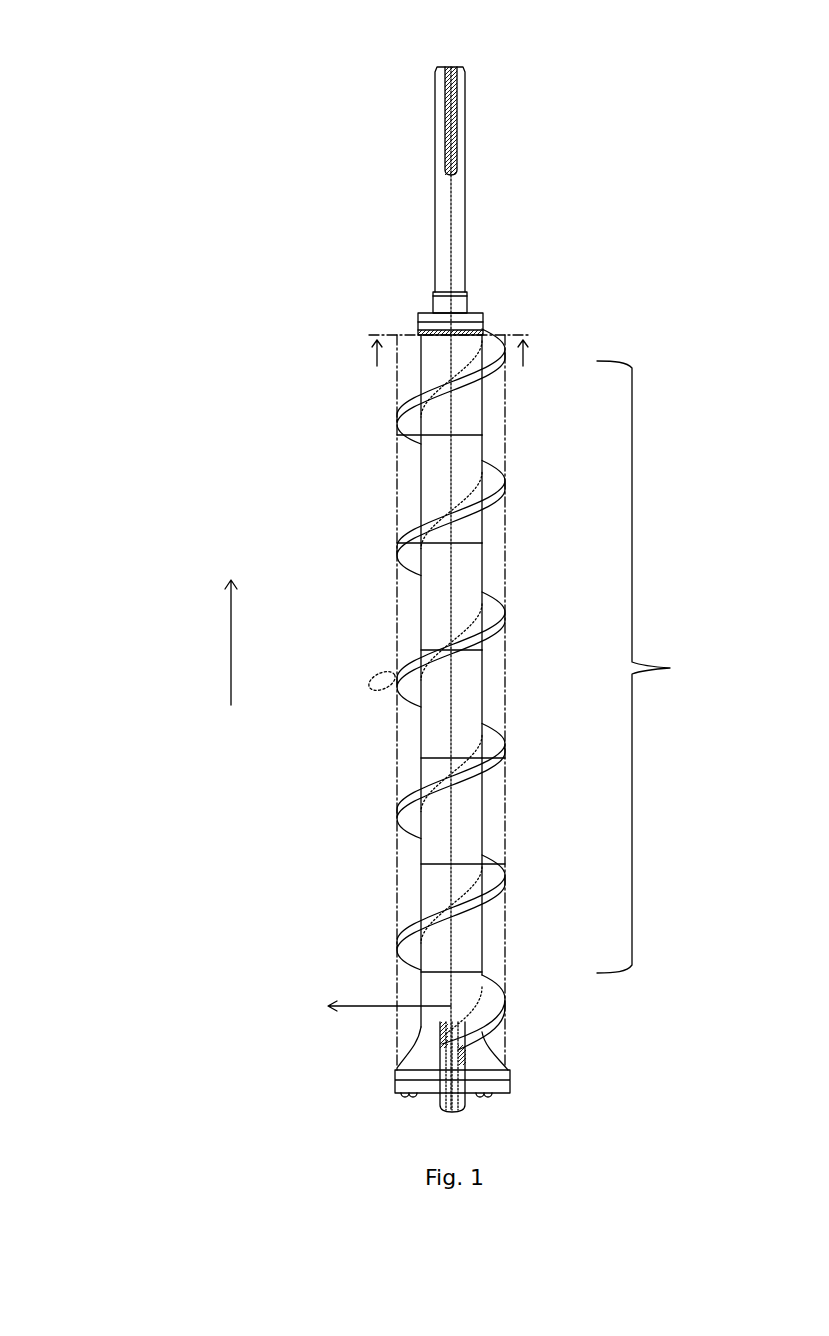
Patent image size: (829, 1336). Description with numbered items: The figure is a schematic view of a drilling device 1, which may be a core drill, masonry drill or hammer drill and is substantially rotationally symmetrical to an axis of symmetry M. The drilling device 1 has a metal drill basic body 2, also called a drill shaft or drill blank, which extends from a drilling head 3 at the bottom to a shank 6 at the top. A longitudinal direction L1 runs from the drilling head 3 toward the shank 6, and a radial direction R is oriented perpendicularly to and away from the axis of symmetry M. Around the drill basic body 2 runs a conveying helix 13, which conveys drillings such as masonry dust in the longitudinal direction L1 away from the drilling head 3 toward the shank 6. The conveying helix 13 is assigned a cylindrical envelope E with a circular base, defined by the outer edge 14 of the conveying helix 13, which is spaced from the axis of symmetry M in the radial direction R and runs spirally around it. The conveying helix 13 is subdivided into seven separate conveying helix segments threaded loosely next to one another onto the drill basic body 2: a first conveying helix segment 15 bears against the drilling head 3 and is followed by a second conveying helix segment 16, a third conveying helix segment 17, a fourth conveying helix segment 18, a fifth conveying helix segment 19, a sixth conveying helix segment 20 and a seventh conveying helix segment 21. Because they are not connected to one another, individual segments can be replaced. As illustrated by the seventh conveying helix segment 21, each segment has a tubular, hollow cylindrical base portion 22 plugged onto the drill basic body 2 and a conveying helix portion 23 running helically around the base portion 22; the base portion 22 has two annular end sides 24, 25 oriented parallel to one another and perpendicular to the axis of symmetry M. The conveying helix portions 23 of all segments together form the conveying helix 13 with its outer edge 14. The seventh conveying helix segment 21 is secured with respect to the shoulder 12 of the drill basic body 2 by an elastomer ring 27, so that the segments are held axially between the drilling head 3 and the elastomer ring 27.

The drilling device 1 is at (390, 71).
The drill basic body 2 is at (467, 189).
The shank 6 is at (467, 95).
The axis of symmetry M is at (452, 225).
The shoulder 12 is at (437, 304).
The end side 25 is at (440, 318).
The elastomer ring 27 is at (483, 313).
The base portion 22 is at (420, 380).
The seventh conveying helix segment 21 is at (482, 402).
The conveying helix portion 23 is at (397, 415).
The end side 24 is at (437, 437).
The sixth conveying helix segment 20 is at (482, 443).
The fifth conveying helix segment 19 is at (482, 562).
The fourth conveying helix segment 18 is at (482, 708).
The third conveying helix segment 17 is at (482, 832).
The second conveying helix segment 16 is at (482, 923).
The first conveying helix segment 15 is at (482, 974).
The conveying helix 13 is at (650, 667).
The outer edge 14 is at (397, 798).
The envelope E is at (397, 875).
The drilling head 3 is at (510, 1071).
The longitudinal direction L1 is at (249, 642).
The radial direction R is at (389, 1019).